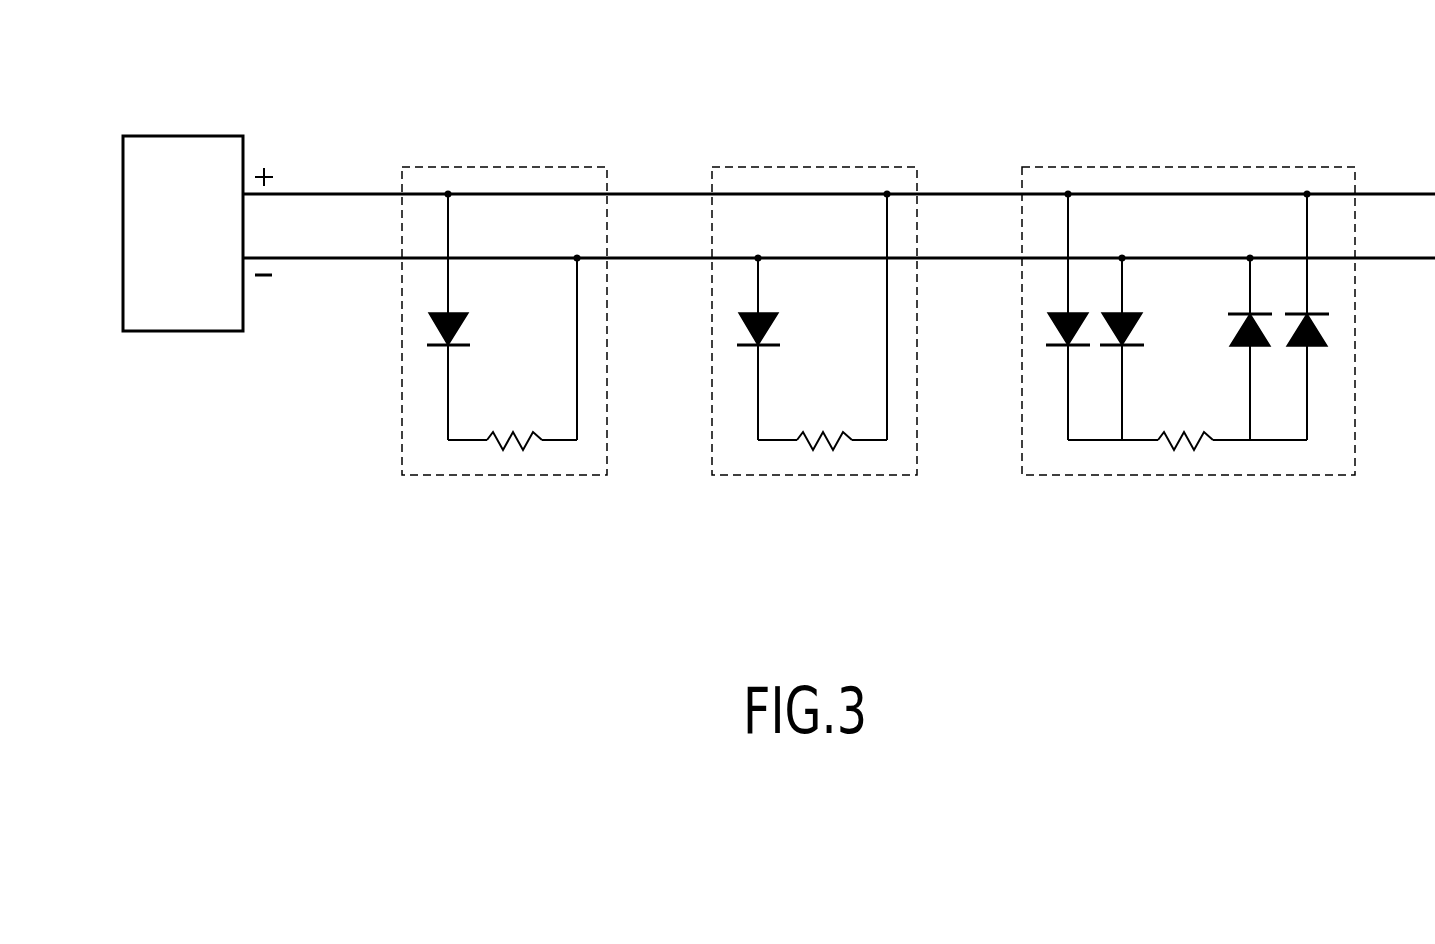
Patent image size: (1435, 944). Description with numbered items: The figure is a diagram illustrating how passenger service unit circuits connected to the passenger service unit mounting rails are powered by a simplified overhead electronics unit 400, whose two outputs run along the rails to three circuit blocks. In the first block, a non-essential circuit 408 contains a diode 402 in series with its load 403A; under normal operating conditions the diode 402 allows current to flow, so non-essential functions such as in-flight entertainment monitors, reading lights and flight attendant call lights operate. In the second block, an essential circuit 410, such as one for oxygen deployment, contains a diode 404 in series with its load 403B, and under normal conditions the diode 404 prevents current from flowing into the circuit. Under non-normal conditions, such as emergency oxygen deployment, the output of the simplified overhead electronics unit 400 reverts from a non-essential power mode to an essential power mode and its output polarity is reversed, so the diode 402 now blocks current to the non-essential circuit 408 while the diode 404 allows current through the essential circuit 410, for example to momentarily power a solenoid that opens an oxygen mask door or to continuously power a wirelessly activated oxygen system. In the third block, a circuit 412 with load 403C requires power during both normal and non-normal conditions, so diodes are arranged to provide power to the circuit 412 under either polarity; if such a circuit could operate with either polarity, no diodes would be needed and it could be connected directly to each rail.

The simplified overhead electronics unit 400 is at (168, 133).
The diode 402 is at (463, 314).
The load 403A is at (516, 428).
The load 403B is at (826, 428).
The load 403C is at (1191, 428).
The diode 404 is at (773, 314).
The non-essential circuit 408 is at (504, 340).
The essential circuit 410 is at (814, 340).
The circuit 412 is at (1188, 340).